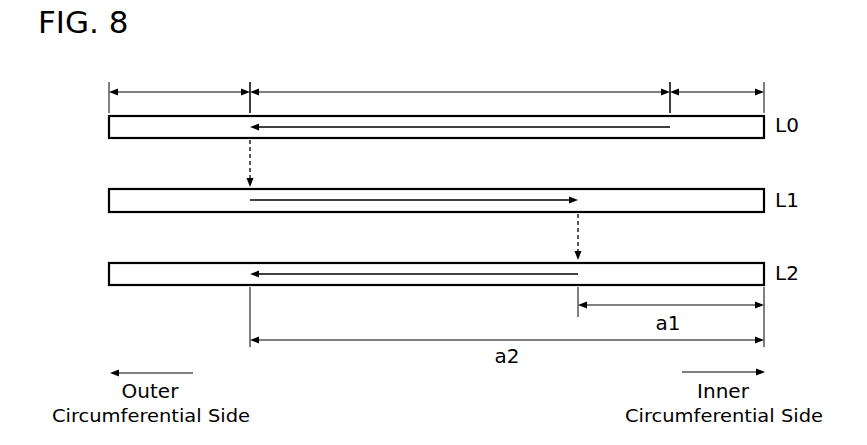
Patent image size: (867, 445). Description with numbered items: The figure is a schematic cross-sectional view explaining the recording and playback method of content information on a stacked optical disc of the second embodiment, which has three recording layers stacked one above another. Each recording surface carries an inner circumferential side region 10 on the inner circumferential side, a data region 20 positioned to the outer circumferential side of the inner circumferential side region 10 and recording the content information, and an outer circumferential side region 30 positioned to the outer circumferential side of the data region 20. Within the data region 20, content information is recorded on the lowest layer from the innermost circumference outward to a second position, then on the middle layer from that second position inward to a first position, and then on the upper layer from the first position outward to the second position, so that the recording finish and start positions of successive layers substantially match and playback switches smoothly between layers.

The inner circumferential side region 10 is at (717, 88).
The data region 20 is at (460, 88).
The outer circumferential side region 30 is at (179, 88).